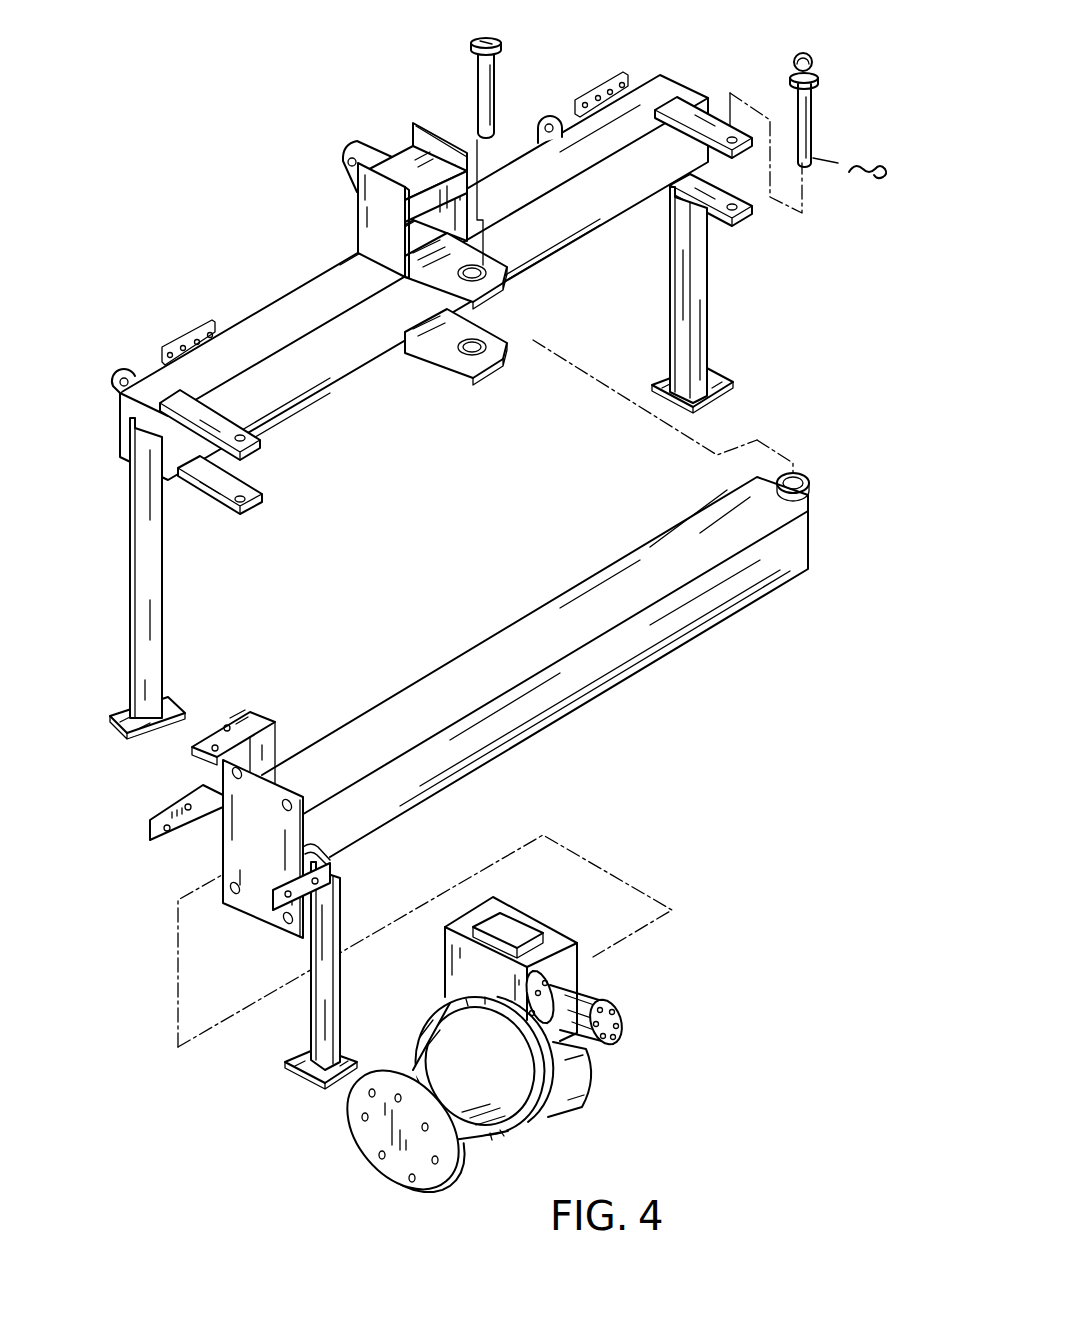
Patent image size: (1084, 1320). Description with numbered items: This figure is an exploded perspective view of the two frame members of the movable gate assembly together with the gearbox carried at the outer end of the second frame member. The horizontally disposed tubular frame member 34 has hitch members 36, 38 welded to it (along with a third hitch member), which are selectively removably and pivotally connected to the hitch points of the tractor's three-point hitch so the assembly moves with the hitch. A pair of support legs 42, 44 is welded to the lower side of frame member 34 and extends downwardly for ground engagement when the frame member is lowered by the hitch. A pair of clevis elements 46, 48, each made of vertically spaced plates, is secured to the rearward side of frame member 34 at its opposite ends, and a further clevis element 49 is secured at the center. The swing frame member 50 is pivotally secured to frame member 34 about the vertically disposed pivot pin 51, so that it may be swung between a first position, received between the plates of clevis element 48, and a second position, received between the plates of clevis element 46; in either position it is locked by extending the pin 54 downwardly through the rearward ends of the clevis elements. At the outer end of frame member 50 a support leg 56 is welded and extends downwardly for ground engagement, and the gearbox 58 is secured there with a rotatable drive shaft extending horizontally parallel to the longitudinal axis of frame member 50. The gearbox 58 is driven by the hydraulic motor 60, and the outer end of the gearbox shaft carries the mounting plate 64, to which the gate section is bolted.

The tubular frame member 34 is at (311, 424).
The hitch member 36 is at (546, 114).
The hitch member 38 is at (129, 368).
The support leg 42 is at (703, 320).
The support leg 44 is at (150, 613).
The clevis element 46 is at (752, 224).
The clevis element 48 is at (257, 526).
The clevis element 49 is at (509, 299).
The swing frame member 50 is at (517, 597).
The pivot pin 51 is at (470, 40).
The pin 54 is at (813, 102).
The support leg 56 is at (318, 1003).
The gearbox 58 is at (569, 1089).
The hydraulic motor 60 is at (590, 998).
The mounting plate 64 is at (383, 1138).